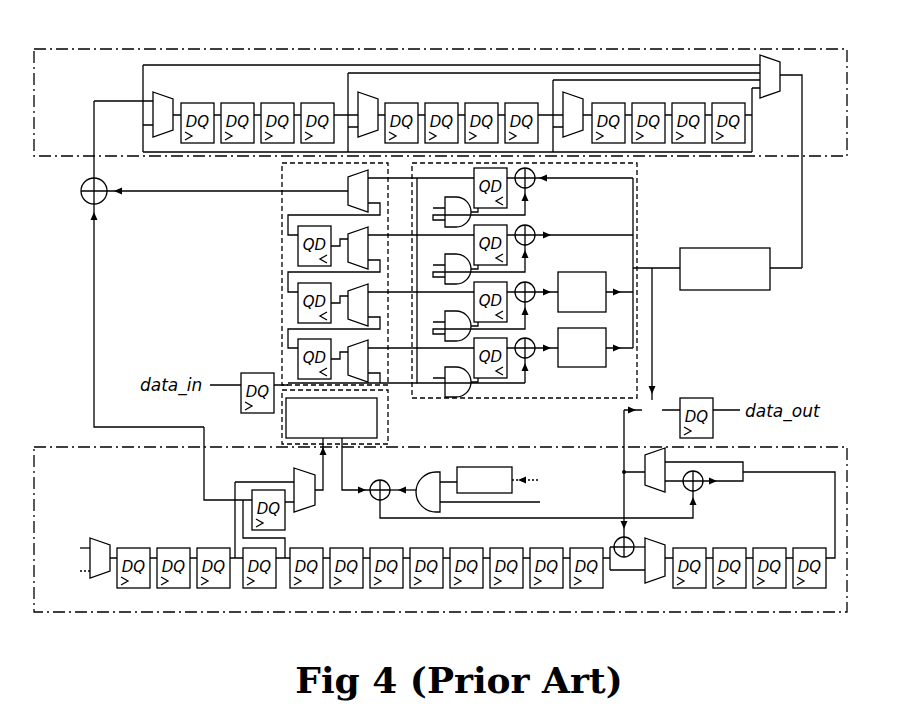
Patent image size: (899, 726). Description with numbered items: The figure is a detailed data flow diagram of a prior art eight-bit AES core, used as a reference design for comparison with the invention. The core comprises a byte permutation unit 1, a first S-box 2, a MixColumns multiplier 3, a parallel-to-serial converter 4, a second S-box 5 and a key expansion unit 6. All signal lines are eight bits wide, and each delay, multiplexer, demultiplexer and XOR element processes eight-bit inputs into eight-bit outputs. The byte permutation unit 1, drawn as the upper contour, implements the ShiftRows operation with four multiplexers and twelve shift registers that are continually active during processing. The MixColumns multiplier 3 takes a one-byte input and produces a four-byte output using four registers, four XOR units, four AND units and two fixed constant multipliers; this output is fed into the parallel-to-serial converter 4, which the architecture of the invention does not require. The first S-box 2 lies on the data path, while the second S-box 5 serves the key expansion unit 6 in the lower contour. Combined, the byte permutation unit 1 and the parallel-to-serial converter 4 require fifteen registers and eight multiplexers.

The byte permutation unit 1 is at (820, 60).
The first S-box 2 is at (737, 248).
The MixColumns multiplier 3 is at (633, 172).
The parallel-to-serial converter 4 is at (290, 176).
The second S-box 5 is at (385, 424).
The key expansion unit 6 is at (82, 452).